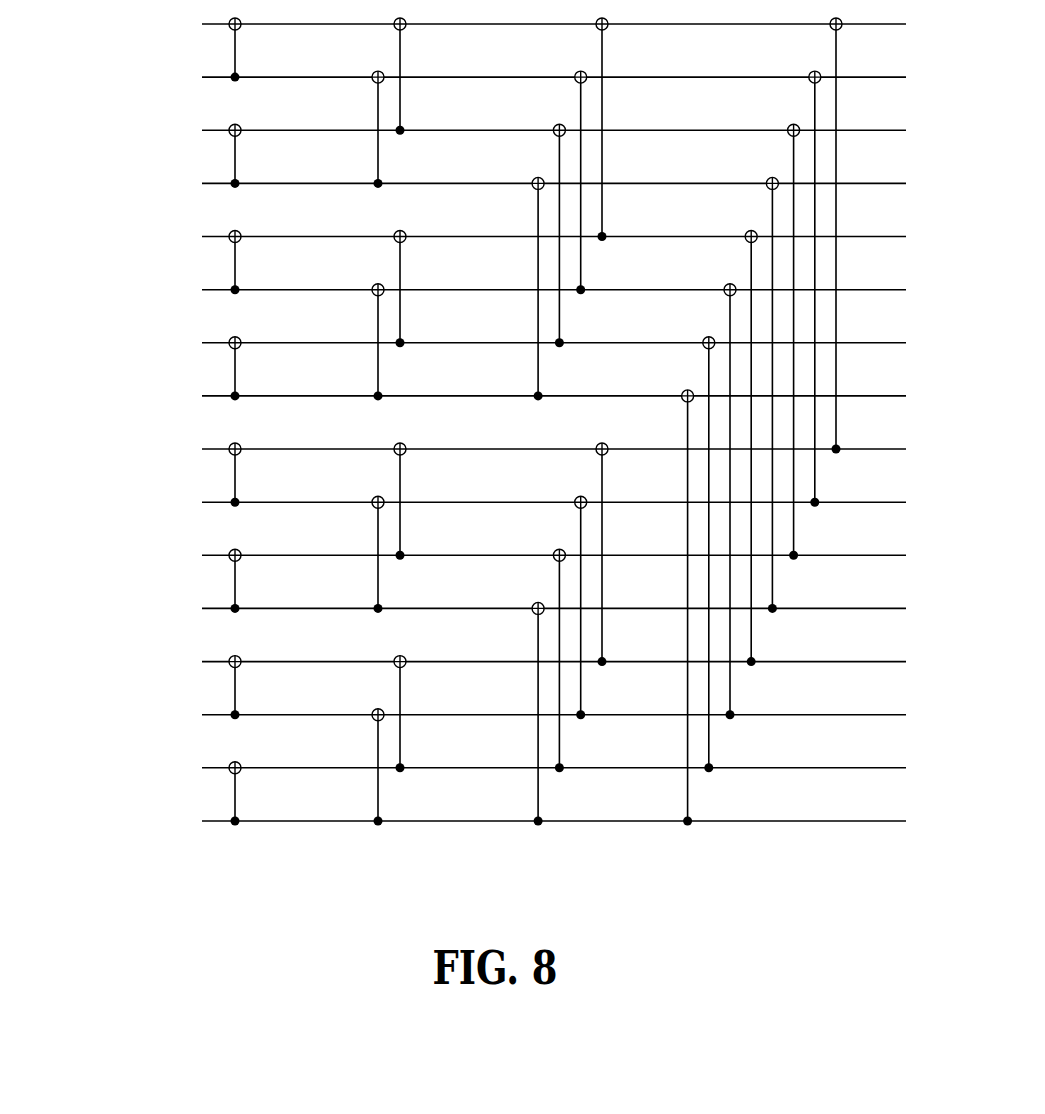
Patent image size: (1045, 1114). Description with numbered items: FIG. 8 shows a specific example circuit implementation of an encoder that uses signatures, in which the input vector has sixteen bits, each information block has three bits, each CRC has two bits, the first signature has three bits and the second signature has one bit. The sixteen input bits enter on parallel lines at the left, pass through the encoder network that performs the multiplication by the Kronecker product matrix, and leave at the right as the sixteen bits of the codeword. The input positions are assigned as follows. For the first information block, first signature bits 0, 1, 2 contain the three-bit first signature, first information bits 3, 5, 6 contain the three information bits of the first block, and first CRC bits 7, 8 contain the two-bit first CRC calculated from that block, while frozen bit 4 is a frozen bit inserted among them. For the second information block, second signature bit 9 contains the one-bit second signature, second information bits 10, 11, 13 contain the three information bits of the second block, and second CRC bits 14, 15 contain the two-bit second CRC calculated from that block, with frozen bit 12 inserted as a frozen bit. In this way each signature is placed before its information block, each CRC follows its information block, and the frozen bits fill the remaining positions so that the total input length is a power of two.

The first signature bit 0 is at (486, 24).
The first signature bit 1 is at (486, 77).
The first signature bit 2 is at (486, 130).
The first information bit 3 is at (528, 183).
The frozen bit 4 is at (560, 236).
The first information bit 5 is at (528, 289).
The first information bit 6 is at (528, 342).
The first CRC bit 7 is at (508, 395).
The first CRC bit 8 is at (508, 449).
The second signature bit 9 is at (486, 502).
The second information bit 10 is at (533, 555).
The second information bit 11 is at (533, 608).
The frozen bit 12 is at (565, 661).
The second information bit 13 is at (533, 714).
The second CRC bit 14 is at (513, 767).
The second CRC bit 15 is at (513, 821).